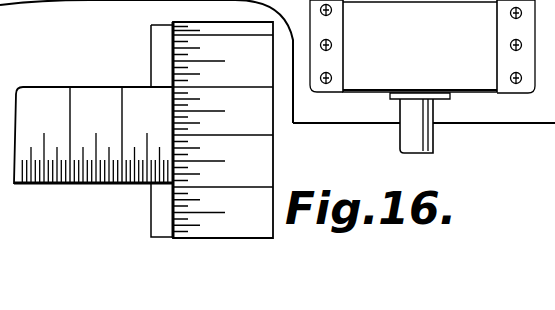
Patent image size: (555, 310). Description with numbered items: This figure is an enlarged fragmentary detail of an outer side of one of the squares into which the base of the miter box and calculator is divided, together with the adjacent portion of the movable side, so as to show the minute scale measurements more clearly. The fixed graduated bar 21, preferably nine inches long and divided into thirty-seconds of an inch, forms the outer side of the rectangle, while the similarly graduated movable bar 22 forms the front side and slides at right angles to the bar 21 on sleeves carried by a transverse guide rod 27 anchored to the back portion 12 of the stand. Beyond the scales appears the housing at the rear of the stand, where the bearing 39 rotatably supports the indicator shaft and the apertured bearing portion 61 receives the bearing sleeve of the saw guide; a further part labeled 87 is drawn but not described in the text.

The back portion 12 is at (554, 115).
The graduated bar 21 is at (274, 163).
The movable graduated bar 22 is at (55, 98).
The guide rod 27 is at (157, 195).
The bearing 39 is at (422, 46).
The apertured bearing portion 61 is at (412, 0).
The stem 87 is at (433, 142).